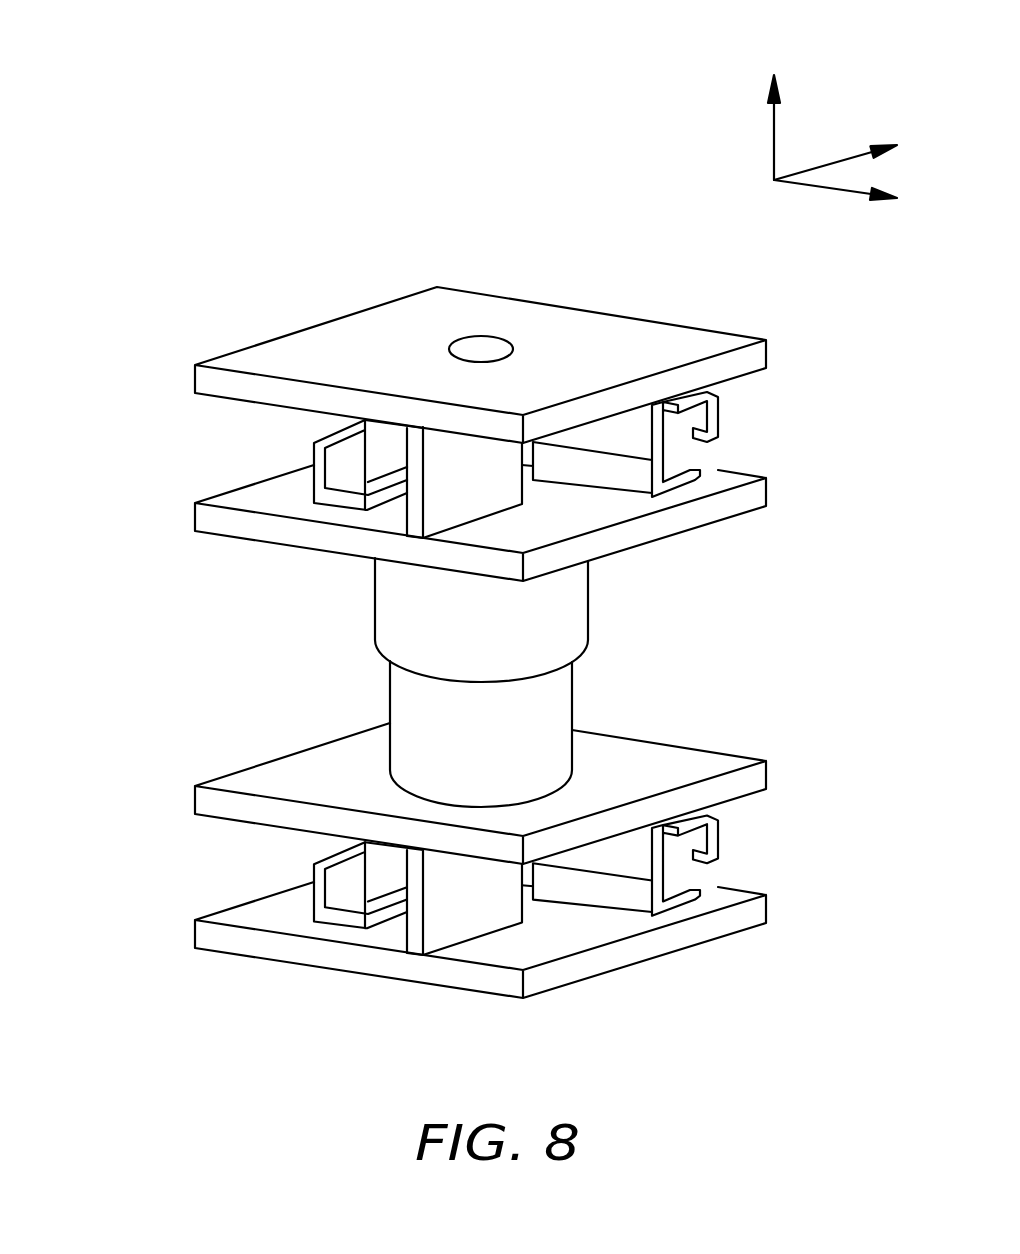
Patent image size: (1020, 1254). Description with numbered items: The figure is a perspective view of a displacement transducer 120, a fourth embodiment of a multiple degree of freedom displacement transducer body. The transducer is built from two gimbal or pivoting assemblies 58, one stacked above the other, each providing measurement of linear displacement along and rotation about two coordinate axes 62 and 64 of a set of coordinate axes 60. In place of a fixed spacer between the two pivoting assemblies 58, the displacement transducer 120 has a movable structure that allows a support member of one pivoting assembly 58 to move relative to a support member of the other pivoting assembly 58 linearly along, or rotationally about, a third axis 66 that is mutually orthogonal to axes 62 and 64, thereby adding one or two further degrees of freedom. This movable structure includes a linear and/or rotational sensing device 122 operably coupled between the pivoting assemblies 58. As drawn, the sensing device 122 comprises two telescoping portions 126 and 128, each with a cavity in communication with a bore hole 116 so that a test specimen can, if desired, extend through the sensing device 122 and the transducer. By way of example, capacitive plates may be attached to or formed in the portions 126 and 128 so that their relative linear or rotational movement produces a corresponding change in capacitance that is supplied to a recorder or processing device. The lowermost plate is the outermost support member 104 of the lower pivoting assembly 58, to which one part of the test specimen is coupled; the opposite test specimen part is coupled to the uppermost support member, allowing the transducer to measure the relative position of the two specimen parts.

The pivoting assembly 58 is at (240, 438).
The coordinate axes 60 is at (761, 144).
The axis 62 is at (823, 190).
The axis 64 is at (823, 160).
The axis 66 is at (774, 127).
The support member 104 is at (715, 928).
The bore hole 116 is at (472, 337).
The displacement transducer 120 is at (368, 208).
The sensing device 122 is at (175, 633).
The portion 126 is at (568, 635).
The portion 128 is at (548, 722).